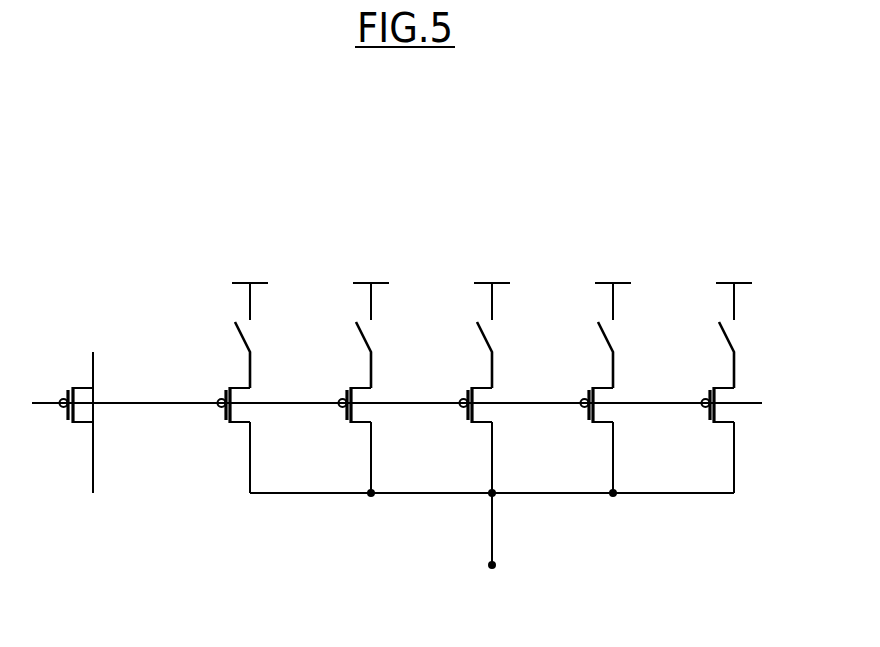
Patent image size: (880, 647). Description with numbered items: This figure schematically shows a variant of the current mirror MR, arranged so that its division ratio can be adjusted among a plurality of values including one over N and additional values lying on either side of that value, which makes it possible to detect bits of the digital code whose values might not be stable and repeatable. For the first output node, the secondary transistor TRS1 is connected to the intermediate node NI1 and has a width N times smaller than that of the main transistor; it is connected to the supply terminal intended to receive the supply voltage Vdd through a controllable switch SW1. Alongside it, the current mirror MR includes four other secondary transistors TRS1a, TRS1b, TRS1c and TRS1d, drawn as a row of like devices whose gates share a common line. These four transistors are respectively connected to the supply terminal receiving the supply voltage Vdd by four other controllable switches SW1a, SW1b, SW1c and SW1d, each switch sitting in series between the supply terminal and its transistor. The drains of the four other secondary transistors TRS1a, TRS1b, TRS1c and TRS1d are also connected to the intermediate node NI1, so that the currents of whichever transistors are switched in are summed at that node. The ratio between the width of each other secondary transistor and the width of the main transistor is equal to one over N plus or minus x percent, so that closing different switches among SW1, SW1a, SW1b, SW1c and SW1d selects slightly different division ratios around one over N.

The current mirror MR is at (384, 555).
The supply voltage Vdd is at (492, 291).
The controllable switch SW1 is at (472, 342).
The controllable switch SW1a is at (351, 342).
The controllable switch SW1b is at (230, 342).
The controllable switch SW1c is at (593, 342).
The controllable switch SW1d is at (714, 342).
The secondary transistor TRS1 is at (452, 428).
The secondary transistor TRS1a is at (331, 428).
The secondary transistor TRS1b is at (209, 428).
The secondary transistor TRS1c is at (573, 428).
The secondary transistor TRS1d is at (694, 428).
The intermediate node NI1 is at (497, 565).